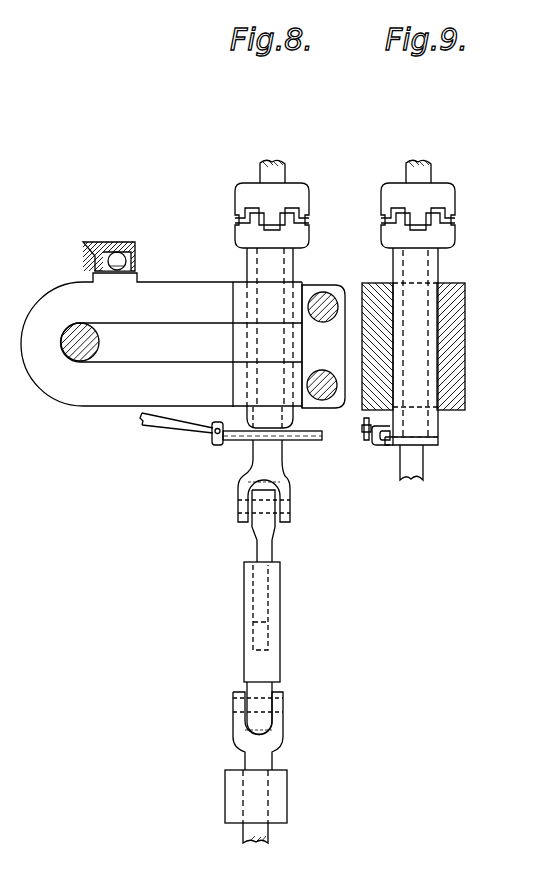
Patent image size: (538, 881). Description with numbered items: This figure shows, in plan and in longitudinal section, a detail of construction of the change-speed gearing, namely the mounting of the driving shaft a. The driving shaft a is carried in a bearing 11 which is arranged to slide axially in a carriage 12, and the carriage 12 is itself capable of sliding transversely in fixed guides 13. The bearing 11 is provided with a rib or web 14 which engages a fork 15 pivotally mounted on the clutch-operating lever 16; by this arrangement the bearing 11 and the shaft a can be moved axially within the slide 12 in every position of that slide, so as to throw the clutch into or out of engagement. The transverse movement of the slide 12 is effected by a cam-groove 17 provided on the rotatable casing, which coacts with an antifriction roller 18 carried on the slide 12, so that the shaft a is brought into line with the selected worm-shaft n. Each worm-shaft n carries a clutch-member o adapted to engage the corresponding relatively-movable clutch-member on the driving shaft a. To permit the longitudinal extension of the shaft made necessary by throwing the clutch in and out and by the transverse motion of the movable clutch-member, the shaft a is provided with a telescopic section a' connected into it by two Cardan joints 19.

In FIG. 8, the bearing 11 is at (290, 268).
In FIG. 9, the bearing 11 is at (437, 268).
In FIG. 8, the carriage 12 is at (300, 418).
In FIG. 9, the carriage 12 is at (448, 290).
In FIG. 8, the fixed guides 13 is at (344, 338).
In FIG. 9, the fixed guides 13 is at (465, 342).
In FIG. 8, the rib or web 14 is at (319, 440).
In FIG. 9, the rib or web 14 is at (386, 447).
In FIG. 8, the fork 15 is at (218, 445).
In FIG. 9, the fork 15 is at (372, 441).
In FIG. 8, the clutch-operating lever 16 is at (184, 428).
In FIG. 9, the clutch-operating lever 16 is at (362, 428).
In FIG. 8, the cam-groove 17 is at (135, 252).
In FIG. 8, the antifriction roller 18 is at (128, 268).
In FIG. 8, the Cardan joints 19 is at (288, 506).
In FIG. 8, the worm-shaft n is at (283, 176).
In FIG. 9, the worm-shaft n is at (430, 176).
In FIG. 8, the clutch-member o is at (272, 215).
In FIG. 9, the clutch-member o is at (418, 215).
In FIG. 8, the driving shaft a is at (263, 641).
In FIG. 9, the driving shaft a is at (422, 462).
In FIG. 8, the telescopic section a' is at (275, 622).